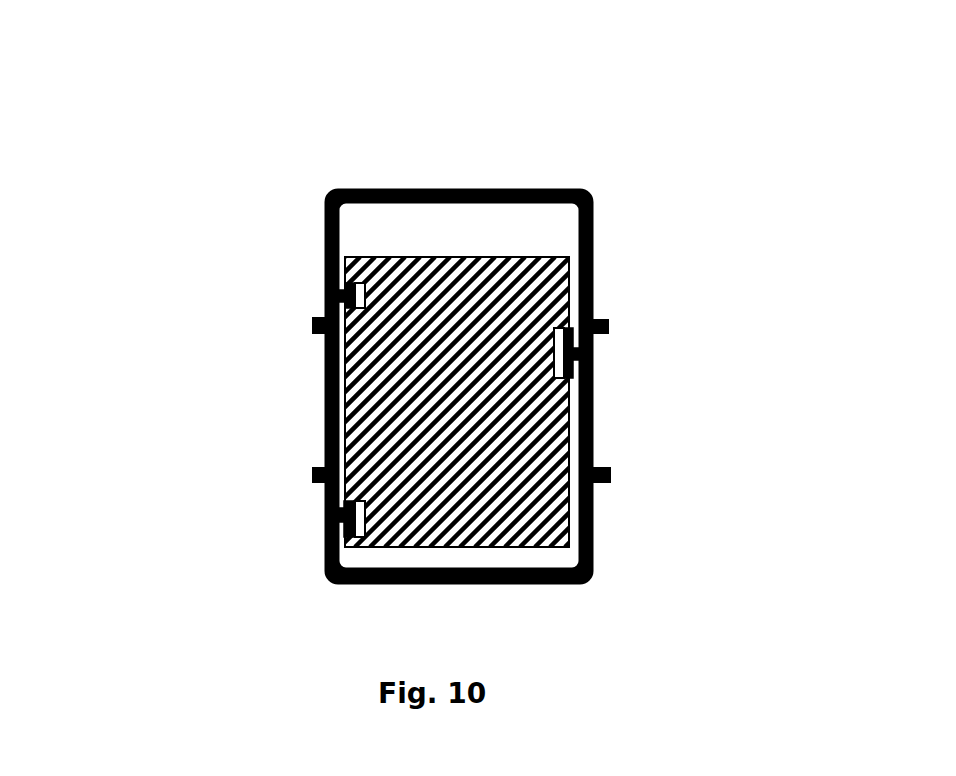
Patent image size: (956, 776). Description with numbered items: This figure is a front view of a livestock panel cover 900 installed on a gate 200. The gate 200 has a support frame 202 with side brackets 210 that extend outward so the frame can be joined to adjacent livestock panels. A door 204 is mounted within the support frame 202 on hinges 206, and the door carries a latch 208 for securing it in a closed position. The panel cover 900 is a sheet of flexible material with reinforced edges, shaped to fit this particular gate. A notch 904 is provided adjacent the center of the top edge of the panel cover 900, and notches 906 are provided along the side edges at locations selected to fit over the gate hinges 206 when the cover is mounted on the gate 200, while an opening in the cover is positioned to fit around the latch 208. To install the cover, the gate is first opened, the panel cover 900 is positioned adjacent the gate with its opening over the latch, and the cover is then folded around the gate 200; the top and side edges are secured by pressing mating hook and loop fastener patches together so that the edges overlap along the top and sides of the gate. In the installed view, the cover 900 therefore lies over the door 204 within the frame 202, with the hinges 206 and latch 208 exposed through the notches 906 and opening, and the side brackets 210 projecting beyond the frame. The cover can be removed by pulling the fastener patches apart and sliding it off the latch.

The gate 200 is at (193, 157).
The support frame 202 is at (483, 197).
The door 204 is at (340, 525).
The hinges 206 is at (335, 295).
The latch 208 is at (582, 357).
The side brackets 210 is at (323, 473).
The panel cover 900 is at (425, 320).
The notch 904 is at (552, 328).
The notches 906 is at (362, 279).